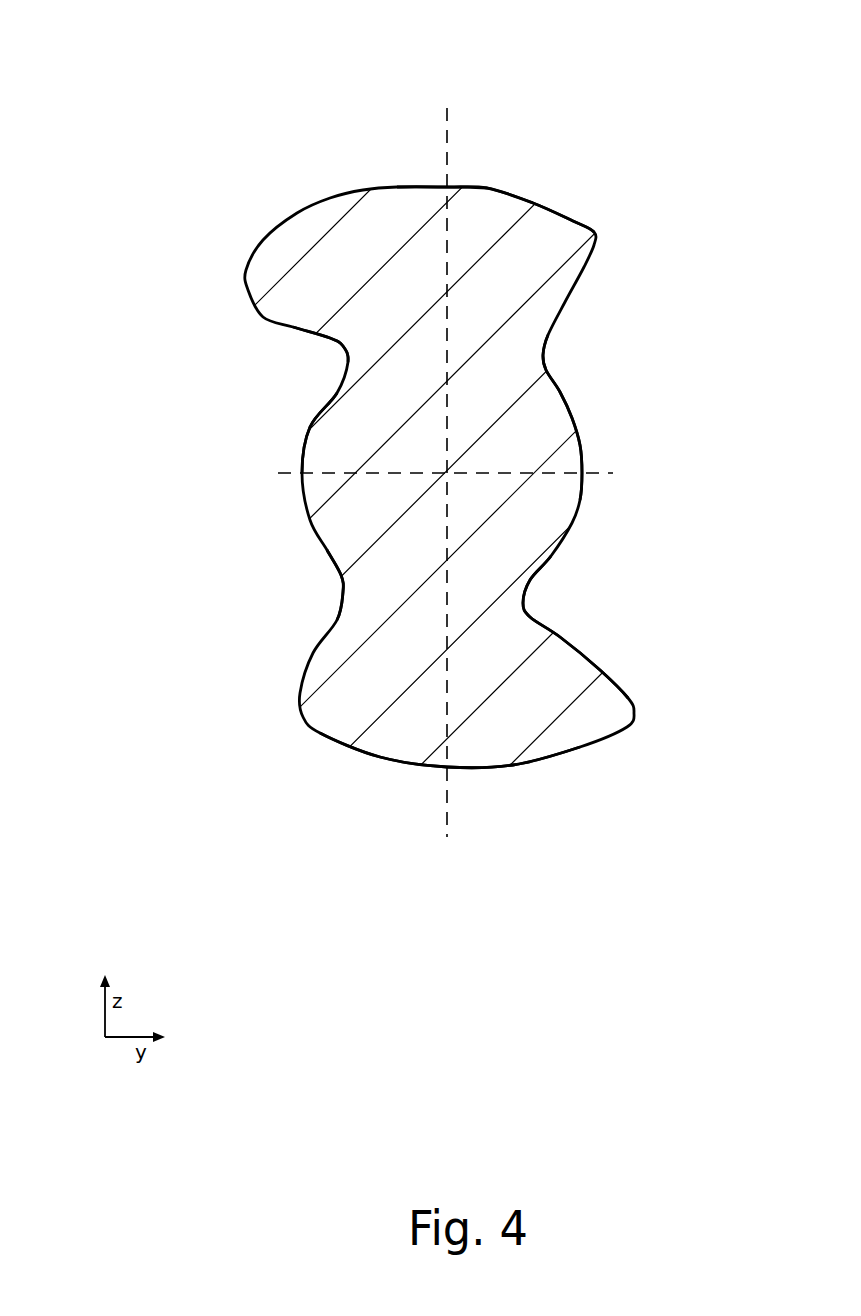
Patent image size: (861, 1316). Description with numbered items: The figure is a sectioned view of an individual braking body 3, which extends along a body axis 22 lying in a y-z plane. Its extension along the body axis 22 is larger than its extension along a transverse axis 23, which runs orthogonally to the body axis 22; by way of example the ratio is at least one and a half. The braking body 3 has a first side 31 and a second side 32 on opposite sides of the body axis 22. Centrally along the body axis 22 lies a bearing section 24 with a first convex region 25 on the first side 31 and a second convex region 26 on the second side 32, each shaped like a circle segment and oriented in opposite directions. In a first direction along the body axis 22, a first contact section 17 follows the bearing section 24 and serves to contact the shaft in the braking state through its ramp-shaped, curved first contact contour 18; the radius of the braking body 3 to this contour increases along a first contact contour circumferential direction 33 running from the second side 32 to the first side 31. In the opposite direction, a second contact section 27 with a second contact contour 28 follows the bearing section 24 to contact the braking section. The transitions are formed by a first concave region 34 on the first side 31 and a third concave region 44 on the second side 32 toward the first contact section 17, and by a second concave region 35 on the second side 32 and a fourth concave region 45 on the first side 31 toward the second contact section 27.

The braking body 3 is at (98, 78).
The first contact section 17 is at (540, 690).
The first contact contour 18 is at (480, 773).
The body axis 22 is at (453, 457).
The transverse axis 23 is at (462, 474).
The bearing section 24 is at (548, 413).
The first convex region 25 is at (582, 452).
The second convex region 26 is at (302, 455).
The second contact section 27 is at (547, 232).
The second contact contour 28 is at (487, 187).
The first side 31 is at (674, 493).
The second side 32 is at (221, 508).
The first contact contour circumferential direction 33 is at (308, 737).
The first concave region 34 is at (527, 605).
The second concave region 35 is at (340, 347).
The third concave region 44 is at (342, 587).
The fourth concave region 45 is at (543, 357).